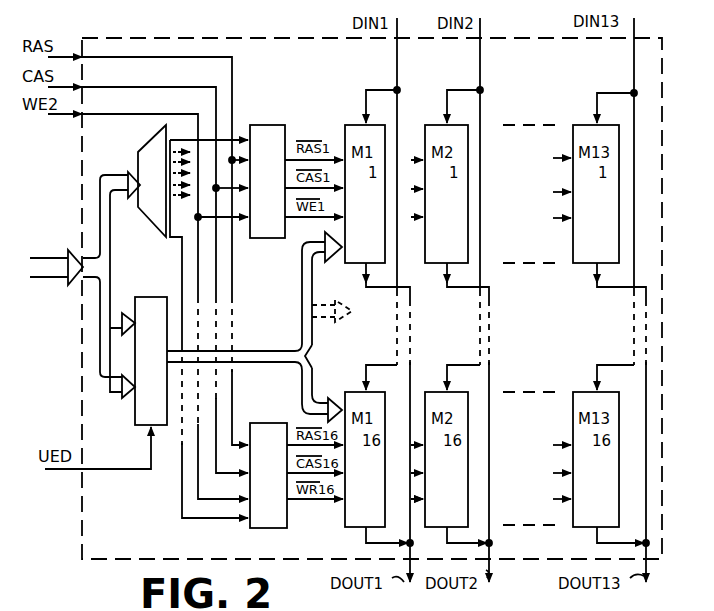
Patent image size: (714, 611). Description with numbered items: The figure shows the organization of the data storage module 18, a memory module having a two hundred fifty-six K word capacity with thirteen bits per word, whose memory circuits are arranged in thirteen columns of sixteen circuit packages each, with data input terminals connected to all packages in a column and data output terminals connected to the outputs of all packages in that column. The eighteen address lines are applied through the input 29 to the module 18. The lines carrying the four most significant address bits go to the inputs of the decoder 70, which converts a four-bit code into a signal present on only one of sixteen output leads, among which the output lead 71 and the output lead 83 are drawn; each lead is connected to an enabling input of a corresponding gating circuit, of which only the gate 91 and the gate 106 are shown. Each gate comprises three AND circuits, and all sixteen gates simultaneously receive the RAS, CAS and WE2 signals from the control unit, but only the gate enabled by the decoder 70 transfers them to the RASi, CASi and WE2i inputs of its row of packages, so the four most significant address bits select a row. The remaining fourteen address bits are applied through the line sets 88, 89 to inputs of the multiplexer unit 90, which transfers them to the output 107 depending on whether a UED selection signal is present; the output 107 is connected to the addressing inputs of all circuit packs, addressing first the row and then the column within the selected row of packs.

The data storage module 18 is at (82, 513).
The input 29 is at (80, 288).
The decoder 70 is at (145, 151).
The output lead 71 is at (197, 140).
The output lead 83 is at (170, 242).
The line set 88 is at (118, 312).
The line set 89 is at (119, 394).
The multiplexer unit 90 is at (137, 428).
The gating circuit 91 is at (280, 125).
The gating circuit 106 is at (268, 424).
The output 107 is at (246, 350).